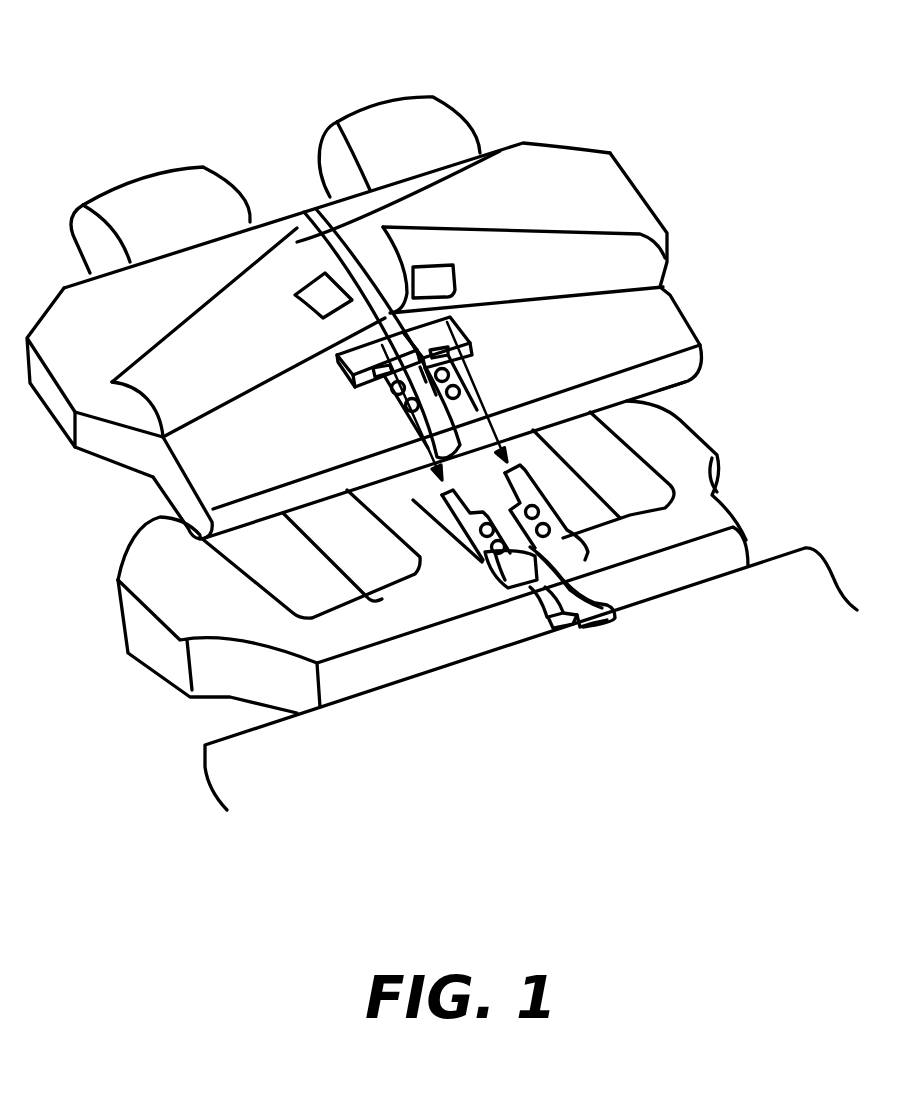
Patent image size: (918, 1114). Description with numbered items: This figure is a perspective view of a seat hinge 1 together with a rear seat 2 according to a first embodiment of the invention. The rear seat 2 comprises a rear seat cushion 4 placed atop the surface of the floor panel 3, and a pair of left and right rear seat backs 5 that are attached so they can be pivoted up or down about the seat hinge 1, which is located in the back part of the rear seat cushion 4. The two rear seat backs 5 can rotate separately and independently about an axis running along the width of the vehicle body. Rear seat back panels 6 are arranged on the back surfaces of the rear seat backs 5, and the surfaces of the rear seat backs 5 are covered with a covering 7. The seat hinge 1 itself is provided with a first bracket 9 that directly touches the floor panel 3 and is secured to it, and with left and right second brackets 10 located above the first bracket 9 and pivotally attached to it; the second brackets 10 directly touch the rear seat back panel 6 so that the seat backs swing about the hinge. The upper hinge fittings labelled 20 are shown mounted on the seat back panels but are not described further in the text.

The seat hinge 1 is at (596, 543).
The rear seat 2 is at (742, 392).
The floor panel 3 is at (230, 777).
The rear seat cushion 4 is at (162, 660).
The rear seat backs 5 is at (410, 190).
The rear seat back panels 6 is at (667, 322).
The covering 7 is at (543, 250).
The first bracket 9 is at (600, 630).
The second brackets 10 is at (490, 555).
The upper hinge bracket 20 is at (448, 322).